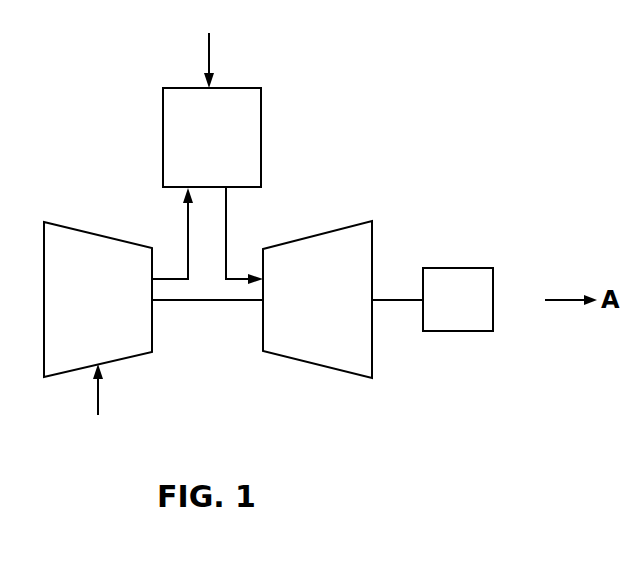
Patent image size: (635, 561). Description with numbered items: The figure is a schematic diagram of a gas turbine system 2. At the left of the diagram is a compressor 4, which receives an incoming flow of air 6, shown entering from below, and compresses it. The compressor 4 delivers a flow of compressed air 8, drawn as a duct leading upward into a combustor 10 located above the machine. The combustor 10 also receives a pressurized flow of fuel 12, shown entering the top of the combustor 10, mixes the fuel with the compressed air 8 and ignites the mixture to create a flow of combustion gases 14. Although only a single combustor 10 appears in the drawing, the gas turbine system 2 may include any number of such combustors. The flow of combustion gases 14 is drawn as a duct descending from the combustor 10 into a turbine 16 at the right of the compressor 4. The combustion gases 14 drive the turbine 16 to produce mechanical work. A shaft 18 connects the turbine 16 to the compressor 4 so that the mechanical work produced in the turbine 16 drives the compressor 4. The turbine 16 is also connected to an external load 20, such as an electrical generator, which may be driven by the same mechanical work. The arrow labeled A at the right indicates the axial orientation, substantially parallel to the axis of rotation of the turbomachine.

The gas turbine system 2 is at (84, 106).
The compressor 4 is at (101, 316).
The incoming flow of air 6 is at (98, 393).
The flow of compressed air 8 is at (187, 242).
The combustor 10 is at (223, 151).
The pressurized flow of fuel 12 is at (216, 55).
The flow of combustion gases 14 is at (227, 247).
The turbine 16 is at (328, 311).
The shaft 18 is at (213, 301).
The external load 20 is at (470, 311).